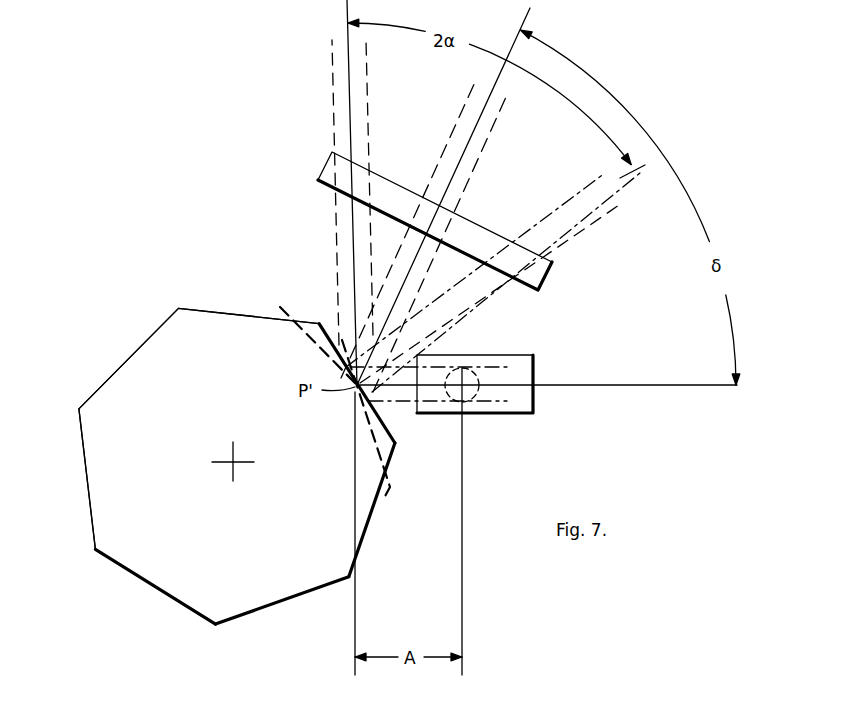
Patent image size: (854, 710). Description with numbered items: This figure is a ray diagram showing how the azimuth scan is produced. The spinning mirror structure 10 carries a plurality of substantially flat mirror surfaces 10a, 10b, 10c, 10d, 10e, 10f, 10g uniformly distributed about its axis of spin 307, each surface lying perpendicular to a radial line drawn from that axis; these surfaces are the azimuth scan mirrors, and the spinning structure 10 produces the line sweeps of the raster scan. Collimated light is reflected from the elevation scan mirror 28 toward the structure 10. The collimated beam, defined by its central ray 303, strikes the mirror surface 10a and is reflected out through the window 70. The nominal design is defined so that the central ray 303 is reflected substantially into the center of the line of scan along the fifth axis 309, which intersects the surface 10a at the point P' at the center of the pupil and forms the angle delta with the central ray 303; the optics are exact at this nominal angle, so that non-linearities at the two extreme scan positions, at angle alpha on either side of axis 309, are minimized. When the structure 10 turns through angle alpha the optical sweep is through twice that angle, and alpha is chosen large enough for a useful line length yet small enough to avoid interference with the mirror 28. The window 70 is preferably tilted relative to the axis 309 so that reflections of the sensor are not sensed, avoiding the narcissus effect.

The spinning mirror structure 10 is at (170, 421).
The mirror surface 10a is at (327, 336).
The mirror surface 10b is at (228, 309).
The mirror surface 10c is at (138, 346).
The mirror surface 10d is at (84, 457).
The mirror surface 10e is at (154, 590).
The mirror surface 10f is at (301, 604).
The mirror surface 10g is at (373, 513).
The elevation scan mirror 28 is at (514, 356).
The window 70 is at (478, 245).
The central ray 303 is at (408, 399).
The axis of spin 307 is at (237, 458).
The fifth axis 309 is at (496, 80).